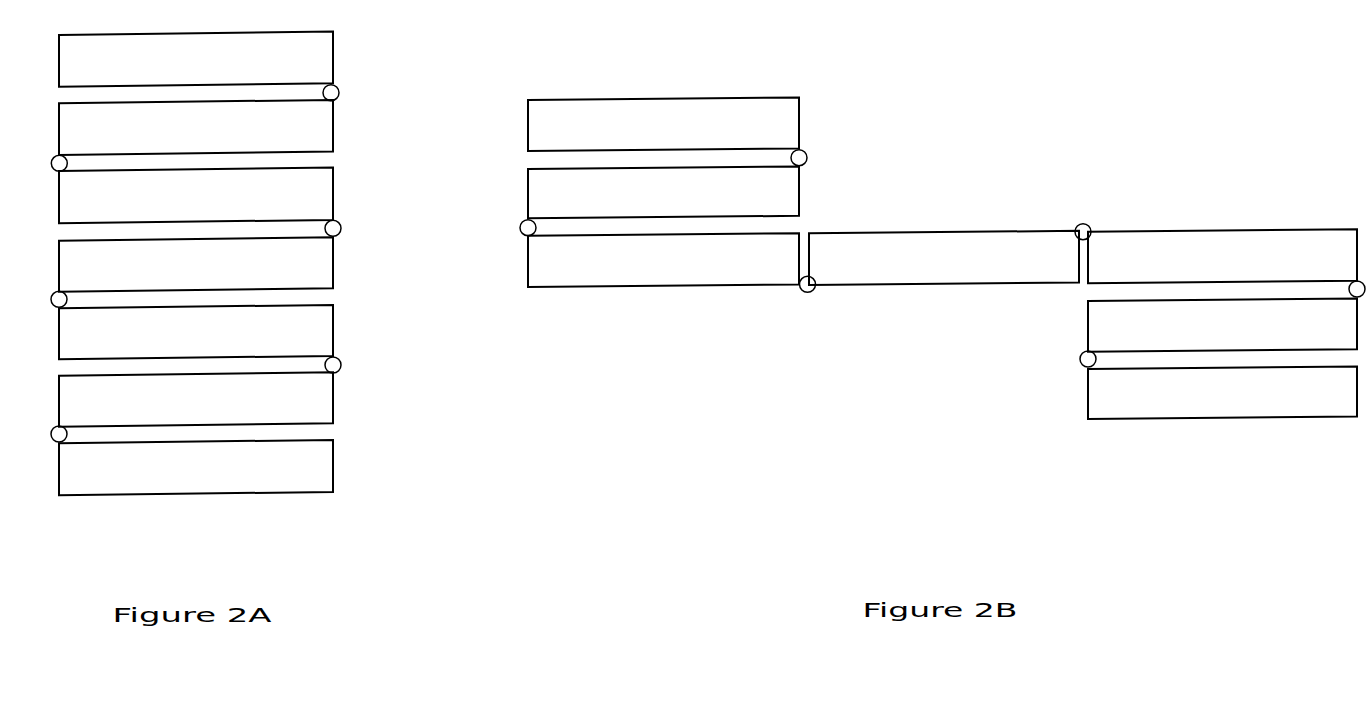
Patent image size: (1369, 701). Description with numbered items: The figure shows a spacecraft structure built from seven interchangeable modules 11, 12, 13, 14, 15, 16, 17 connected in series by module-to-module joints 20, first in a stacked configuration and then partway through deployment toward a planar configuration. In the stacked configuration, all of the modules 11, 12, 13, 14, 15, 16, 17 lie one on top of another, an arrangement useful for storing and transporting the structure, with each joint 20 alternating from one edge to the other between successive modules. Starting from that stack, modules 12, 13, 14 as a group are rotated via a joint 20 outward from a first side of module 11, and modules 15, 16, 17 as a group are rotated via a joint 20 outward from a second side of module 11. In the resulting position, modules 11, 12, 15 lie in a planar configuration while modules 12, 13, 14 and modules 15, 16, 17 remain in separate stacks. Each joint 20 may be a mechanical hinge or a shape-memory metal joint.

In FIG. 2A, the module 11 is at (184, 272).
In FIG. 2B, the module 11 is at (934, 264).
In FIG. 2A, the module 12 is at (184, 340).
In FIG. 2B, the module 12 is at (652, 267).
In FIG. 2A, the module 13 is at (184, 407).
In FIG. 2B, the module 13 is at (652, 200).
In FIG. 2A, the module 14 is at (184, 475).
In FIG. 2B, the module 14 is at (652, 131).
In FIG. 2A, the module 15 is at (184, 203).
In FIG. 2B, the module 15 is at (1214, 263).
In FIG. 2A, the module 16 is at (184, 135).
In FIG. 2B, the module 16 is at (1214, 332).
In FIG. 2A, the module 17 is at (184, 67).
In FIG. 2B, the module 17 is at (1214, 400).
In FIG. 2A, the module-to-module joint 20 is at (340, 93).